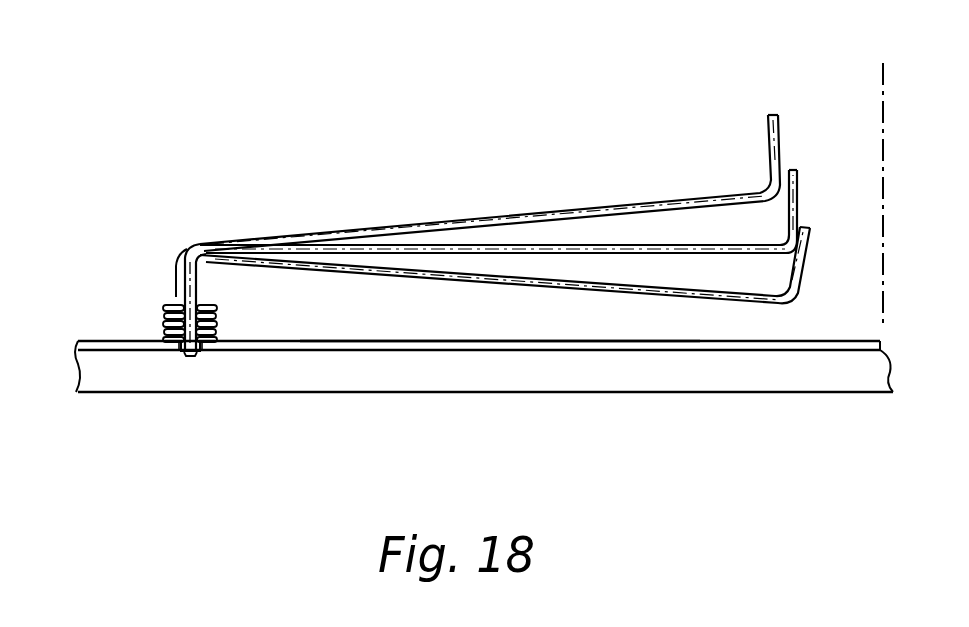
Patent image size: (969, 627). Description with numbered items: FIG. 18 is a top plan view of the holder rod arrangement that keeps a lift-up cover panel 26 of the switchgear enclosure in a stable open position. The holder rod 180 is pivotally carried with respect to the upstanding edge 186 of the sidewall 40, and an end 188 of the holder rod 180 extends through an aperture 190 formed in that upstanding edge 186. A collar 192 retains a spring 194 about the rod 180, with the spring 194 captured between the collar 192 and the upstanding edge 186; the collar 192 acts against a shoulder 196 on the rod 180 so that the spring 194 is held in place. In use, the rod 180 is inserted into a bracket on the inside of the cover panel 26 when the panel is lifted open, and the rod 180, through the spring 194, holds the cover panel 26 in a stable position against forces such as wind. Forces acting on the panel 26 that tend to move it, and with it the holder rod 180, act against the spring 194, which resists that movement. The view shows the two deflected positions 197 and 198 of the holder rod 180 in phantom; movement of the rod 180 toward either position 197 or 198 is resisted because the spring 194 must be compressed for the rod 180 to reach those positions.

The lift-up cover panel 26 is at (883, 105).
The sidewall panel 40 is at (495, 395).
The holder rod 180 is at (545, 247).
The upstanding edge 186 is at (460, 338).
The end of holder rod 188 is at (187, 356).
The aperture 190 is at (190, 357).
The collar 192 is at (164, 313).
The spring 194 is at (165, 332).
The shoulder 196 is at (203, 308).
The position of holder rod 197 is at (603, 207).
The position of holder rod 198 is at (632, 293).